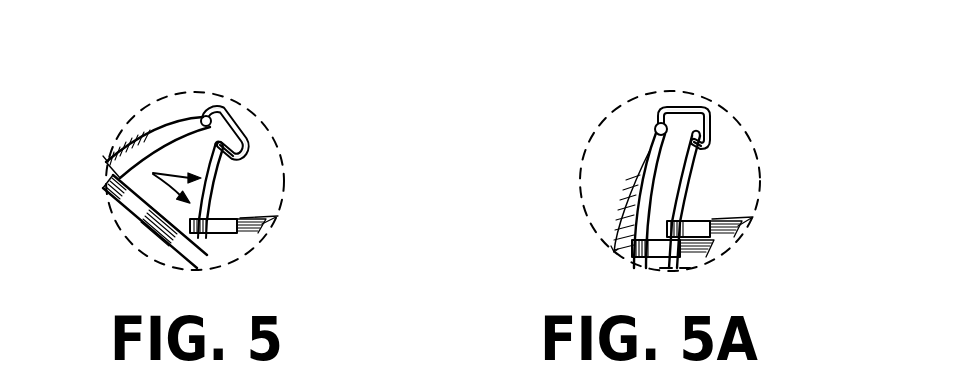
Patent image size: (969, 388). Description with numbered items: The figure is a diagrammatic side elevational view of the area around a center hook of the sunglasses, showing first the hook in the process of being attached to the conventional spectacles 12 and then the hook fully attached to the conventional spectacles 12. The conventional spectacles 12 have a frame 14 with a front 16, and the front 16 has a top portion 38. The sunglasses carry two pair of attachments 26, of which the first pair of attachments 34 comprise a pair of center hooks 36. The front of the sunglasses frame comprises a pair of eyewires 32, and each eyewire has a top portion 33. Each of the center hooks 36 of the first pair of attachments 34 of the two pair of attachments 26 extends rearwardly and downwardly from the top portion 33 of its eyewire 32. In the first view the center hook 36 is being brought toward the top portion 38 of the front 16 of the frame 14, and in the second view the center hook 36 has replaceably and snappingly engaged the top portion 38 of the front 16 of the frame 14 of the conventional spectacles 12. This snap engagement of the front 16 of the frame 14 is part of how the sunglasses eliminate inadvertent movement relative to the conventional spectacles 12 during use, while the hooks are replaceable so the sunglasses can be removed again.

In FIG. 5, the conventional spectacles 12 is at (121, 183).
In FIG. 5A, the conventional spectacles 12 is at (658, 193).
In FIG. 5, the frame 14 is at (262, 228).
In FIG. 5A, the frame 14 is at (682, 212).
In FIG. 5, the front 16 is at (222, 204).
In FIG. 5A, the front 16 is at (682, 195).
In FIG. 5, the two pair of attachments 26 is at (240, 110).
In FIG. 5A, the two pair of attachments 26 is at (665, 104).
In FIG. 5, the pair of eyewires 32 is at (150, 142).
In FIG. 5A, the pair of eyewires 32 is at (648, 167).
In FIG. 5, the top portion 33 is at (200, 116).
In FIG. 5A, the top portion 33 is at (655, 122).
In FIG. 5, the first pair of attachments 34 is at (228, 124).
In FIG. 5, the pair of center hooks 36 is at (239, 148).
In FIG. 5, the top portion 38 is at (227, 158).
In FIG. 5A, the top portion 38 is at (698, 145).